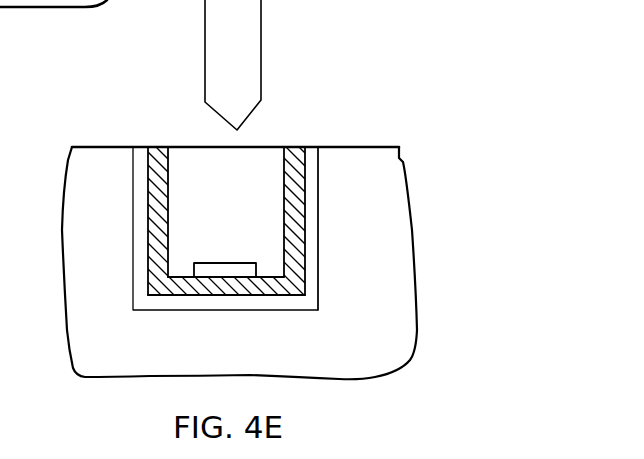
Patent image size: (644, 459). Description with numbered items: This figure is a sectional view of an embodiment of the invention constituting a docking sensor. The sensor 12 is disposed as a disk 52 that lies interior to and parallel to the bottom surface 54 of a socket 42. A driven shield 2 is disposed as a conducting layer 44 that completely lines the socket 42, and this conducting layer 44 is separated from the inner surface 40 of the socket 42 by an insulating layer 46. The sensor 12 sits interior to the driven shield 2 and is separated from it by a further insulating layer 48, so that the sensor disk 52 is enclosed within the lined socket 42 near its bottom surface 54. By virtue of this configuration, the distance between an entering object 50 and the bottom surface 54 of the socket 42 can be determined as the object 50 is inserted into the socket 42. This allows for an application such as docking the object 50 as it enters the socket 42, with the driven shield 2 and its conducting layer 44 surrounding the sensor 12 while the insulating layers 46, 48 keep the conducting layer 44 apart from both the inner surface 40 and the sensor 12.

The driven shield 2 is at (150, 240).
The sensor 12 is at (220, 268).
The inner surface 40 is at (140, 147).
The socket 42 is at (133, 285).
The conducting layer 44 is at (295, 147).
The insulating layer 46 is at (311, 203).
The insulating layer 48 is at (205, 278).
The entering object 50 is at (261, 82).
The disk 52 is at (237, 268).
The bottom surface 54 is at (267, 295).